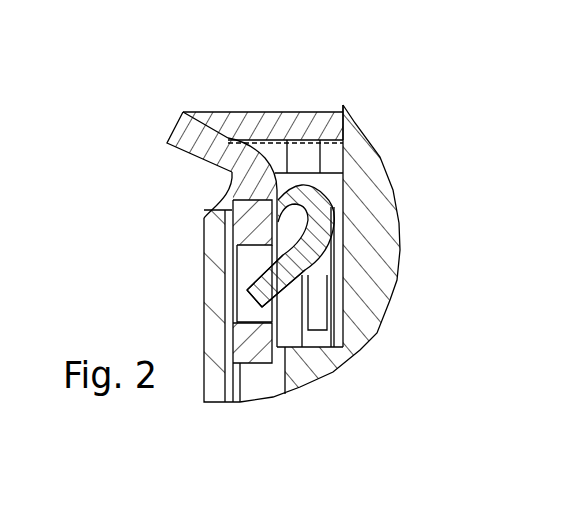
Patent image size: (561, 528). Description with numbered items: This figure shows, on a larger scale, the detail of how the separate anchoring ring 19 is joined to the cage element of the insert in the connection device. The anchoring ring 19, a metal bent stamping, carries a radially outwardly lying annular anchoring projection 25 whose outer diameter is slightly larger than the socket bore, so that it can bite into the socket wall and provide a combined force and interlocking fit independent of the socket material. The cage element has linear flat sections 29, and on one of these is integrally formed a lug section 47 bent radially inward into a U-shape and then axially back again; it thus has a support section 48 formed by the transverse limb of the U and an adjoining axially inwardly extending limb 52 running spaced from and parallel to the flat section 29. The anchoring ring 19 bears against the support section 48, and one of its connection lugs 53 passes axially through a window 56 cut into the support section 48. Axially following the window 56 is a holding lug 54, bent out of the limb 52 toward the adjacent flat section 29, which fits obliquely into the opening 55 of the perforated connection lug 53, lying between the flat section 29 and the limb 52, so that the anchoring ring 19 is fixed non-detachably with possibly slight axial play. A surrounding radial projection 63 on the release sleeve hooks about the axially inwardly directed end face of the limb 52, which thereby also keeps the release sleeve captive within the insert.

The anchoring ring 19 is at (228, 137).
The anchoring projection 25 is at (172, 148).
The flat section 29 is at (214, 306).
The lug section 47 is at (337, 208).
The support section 48 is at (289, 173).
The limb 52 is at (322, 318).
The connection lug 53 is at (245, 226).
The holding lug 54 is at (286, 282).
The opening 55 is at (247, 262).
The window 56 is at (305, 191).
The radial projection 63 is at (307, 357).